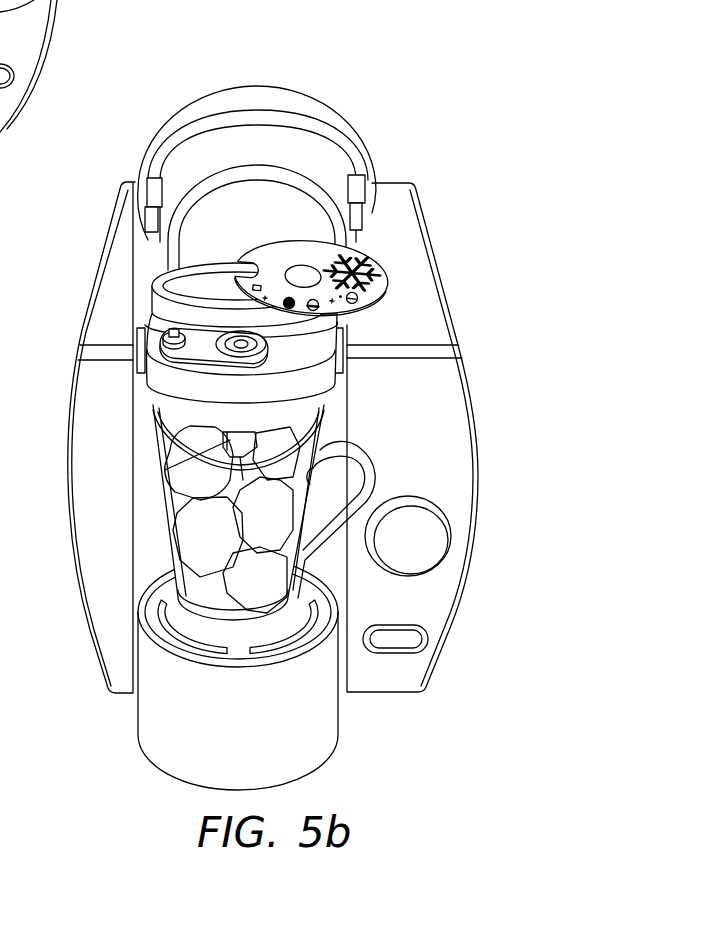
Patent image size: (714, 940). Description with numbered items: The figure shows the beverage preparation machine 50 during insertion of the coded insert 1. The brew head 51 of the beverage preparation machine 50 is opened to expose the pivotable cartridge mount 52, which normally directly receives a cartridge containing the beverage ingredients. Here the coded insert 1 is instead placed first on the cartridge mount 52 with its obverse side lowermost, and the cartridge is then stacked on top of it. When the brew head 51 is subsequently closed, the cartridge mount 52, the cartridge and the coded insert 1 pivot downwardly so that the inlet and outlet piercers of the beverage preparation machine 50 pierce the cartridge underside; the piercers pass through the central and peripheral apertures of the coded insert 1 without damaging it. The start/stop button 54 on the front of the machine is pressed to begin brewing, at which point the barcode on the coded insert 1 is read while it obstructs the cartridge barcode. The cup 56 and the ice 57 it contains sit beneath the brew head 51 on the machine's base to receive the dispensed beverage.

The beverage preparation machine 50 is at (344, 62).
The brew head 51 is at (388, 145).
The cartridge mount 52 is at (157, 306).
The coded insert 1 is at (371, 254).
The start/stop button 54 is at (432, 542).
The cup 56 is at (193, 580).
The ice cubes 57 is at (197, 522).